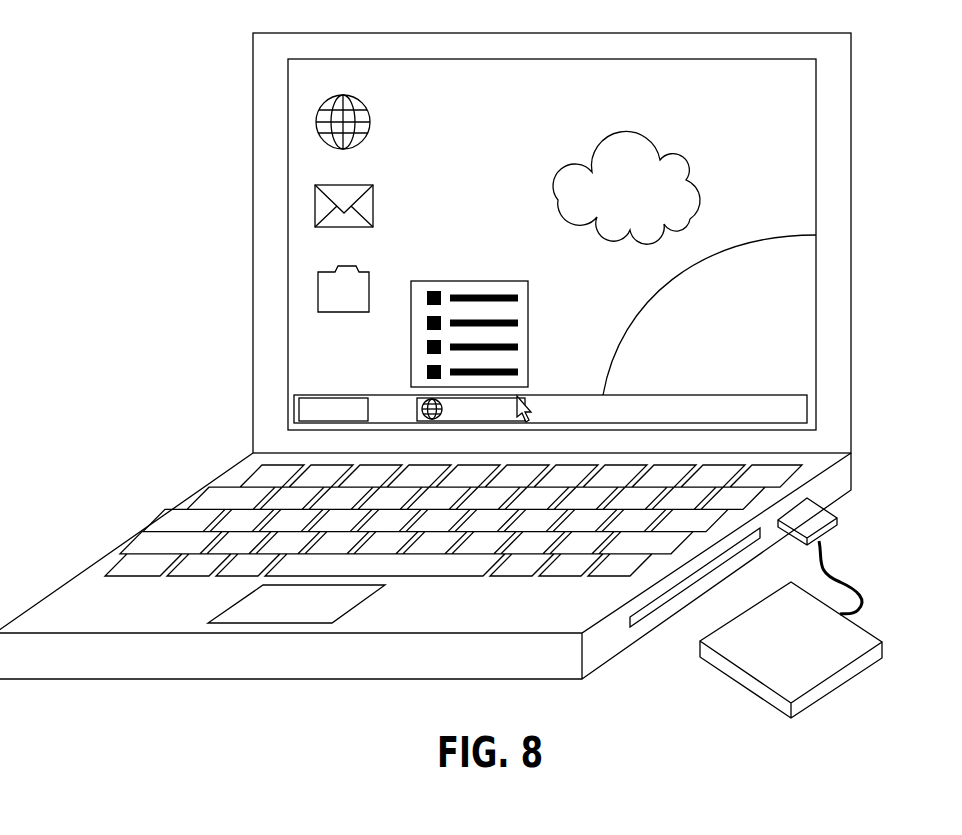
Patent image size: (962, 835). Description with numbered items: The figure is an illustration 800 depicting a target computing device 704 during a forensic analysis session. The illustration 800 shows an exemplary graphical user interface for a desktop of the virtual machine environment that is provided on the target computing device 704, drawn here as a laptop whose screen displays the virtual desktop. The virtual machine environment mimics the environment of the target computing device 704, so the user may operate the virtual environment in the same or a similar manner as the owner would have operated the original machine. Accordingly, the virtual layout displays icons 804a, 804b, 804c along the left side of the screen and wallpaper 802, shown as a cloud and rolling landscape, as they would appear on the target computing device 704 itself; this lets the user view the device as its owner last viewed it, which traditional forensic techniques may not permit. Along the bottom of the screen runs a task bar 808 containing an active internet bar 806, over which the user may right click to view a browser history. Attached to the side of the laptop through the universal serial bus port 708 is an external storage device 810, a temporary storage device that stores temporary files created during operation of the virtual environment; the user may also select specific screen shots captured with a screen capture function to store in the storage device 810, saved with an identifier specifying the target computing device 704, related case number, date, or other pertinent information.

The illustration 800 is at (935, 64).
The wallpaper 802 is at (703, 147).
The icon 804a is at (373, 123).
The icon 804b is at (373, 207).
The icon 804c is at (358, 273).
The active internet bar 806 is at (534, 403).
The task bar 808 is at (740, 403).
The storage device 810 is at (529, 297).
The target computing device 704 is at (597, 641).
The universal serial bus (USB) port 708 is at (817, 688).